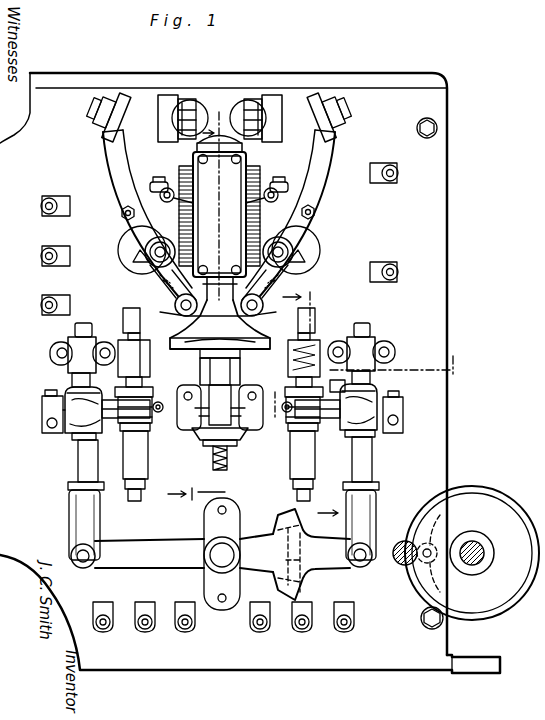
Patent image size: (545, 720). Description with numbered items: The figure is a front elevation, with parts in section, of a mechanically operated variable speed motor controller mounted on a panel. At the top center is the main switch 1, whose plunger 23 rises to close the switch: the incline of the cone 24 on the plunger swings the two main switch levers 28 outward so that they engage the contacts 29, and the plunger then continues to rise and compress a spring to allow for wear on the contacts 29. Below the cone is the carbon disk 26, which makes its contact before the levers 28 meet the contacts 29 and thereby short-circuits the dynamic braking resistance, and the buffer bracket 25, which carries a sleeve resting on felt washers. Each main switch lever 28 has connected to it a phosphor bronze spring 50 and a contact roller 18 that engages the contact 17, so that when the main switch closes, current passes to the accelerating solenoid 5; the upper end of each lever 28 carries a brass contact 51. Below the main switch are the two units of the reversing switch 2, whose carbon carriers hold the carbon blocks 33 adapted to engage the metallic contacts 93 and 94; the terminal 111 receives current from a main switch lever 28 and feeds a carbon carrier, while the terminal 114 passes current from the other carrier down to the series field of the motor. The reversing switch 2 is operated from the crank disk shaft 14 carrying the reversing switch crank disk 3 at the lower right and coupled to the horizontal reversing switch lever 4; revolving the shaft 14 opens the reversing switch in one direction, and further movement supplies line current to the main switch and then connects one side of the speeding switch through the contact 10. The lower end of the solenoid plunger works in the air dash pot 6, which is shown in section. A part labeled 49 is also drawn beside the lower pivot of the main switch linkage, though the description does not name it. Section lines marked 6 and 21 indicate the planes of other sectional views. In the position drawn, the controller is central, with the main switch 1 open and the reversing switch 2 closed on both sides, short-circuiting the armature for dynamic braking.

The main switch 1 is at (219, 218).
The reversing switch 2 is at (58, 428).
The reversing switch crank disk 3 is at (503, 522).
The reversing switch lever 4 is at (184, 554).
The accelerating solenoid 5 is at (355, 554).
The dash pot 6 is at (364, 354).
The contact for speeding switch 10 is at (187, 413).
The crank disk shaft 14 is at (472, 566).
The contact 17 is at (175, 200).
The contact roller 18 is at (124, 220).
The section line 21— 21 is at (197, 310).
The plunger 23 is at (213, 291).
The cone 24 is at (222, 327).
The buffer bracket 25 is at (228, 368).
The carbon disk 26 is at (207, 430).
The main switch levers 28 is at (110, 180).
The contacts 29 is at (168, 100).
The carbon blocks 33 is at (370, 388).
The link 49 is at (179, 318).
The phosphor bronze spring 50 is at (133, 270).
The brass contact 51 is at (316, 128).
The metallic contact 93 is at (124, 428).
The metallic contact 94 is at (143, 390).
The terminal 111 is at (403, 418).
The terminal 114 is at (45, 433).